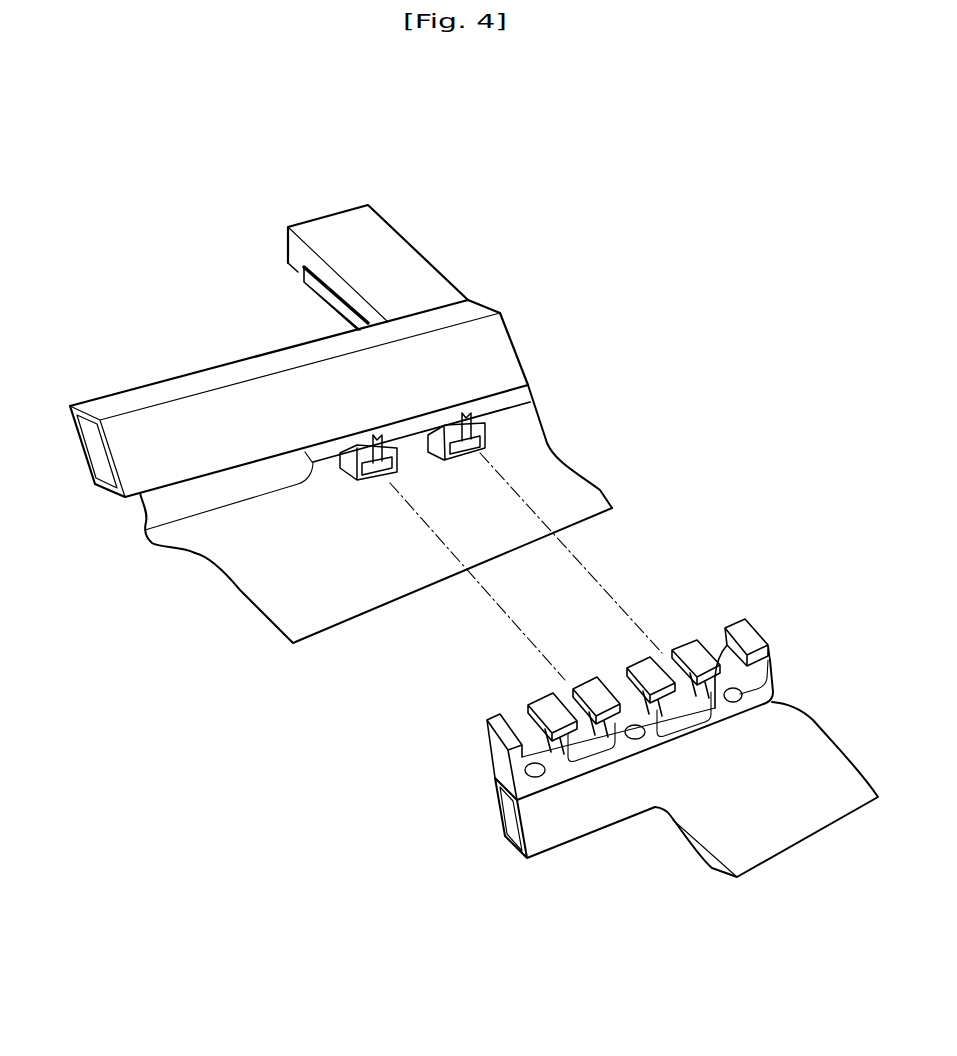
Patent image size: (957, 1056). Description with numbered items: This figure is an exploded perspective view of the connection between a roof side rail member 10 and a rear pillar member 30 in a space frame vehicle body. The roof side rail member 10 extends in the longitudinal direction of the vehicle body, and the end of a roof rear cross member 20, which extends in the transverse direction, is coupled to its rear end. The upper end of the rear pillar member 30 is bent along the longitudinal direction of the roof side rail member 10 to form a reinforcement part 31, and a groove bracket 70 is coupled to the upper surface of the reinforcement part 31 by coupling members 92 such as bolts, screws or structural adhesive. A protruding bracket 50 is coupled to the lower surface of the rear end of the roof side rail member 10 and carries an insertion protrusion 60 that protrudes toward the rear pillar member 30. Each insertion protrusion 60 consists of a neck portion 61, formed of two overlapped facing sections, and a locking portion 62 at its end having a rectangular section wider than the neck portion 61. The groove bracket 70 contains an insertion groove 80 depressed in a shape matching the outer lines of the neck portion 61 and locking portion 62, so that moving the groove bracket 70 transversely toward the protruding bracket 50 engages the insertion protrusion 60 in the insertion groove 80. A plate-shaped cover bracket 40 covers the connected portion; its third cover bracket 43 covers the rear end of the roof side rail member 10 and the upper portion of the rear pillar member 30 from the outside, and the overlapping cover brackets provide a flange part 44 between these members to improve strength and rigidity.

The roof side rail member 10 is at (163, 394).
The roof rear cross member 20 is at (333, 226).
The rear pillar member 30 is at (686, 803).
The reinforcement part 31 is at (545, 832).
The cover bracket 40 is at (365, 524).
The third cover bracket 43 is at (583, 493).
The flange part 44 is at (281, 568).
The protruding bracket 50 is at (147, 530).
The insertion protrusion 60 is at (514, 567).
The neck portion 61 is at (473, 422).
The locking portion 62 is at (485, 442).
The groove bracket 70 is at (682, 782).
The insertion groove 80 is at (593, 747).
The coupling member 92 is at (735, 695).